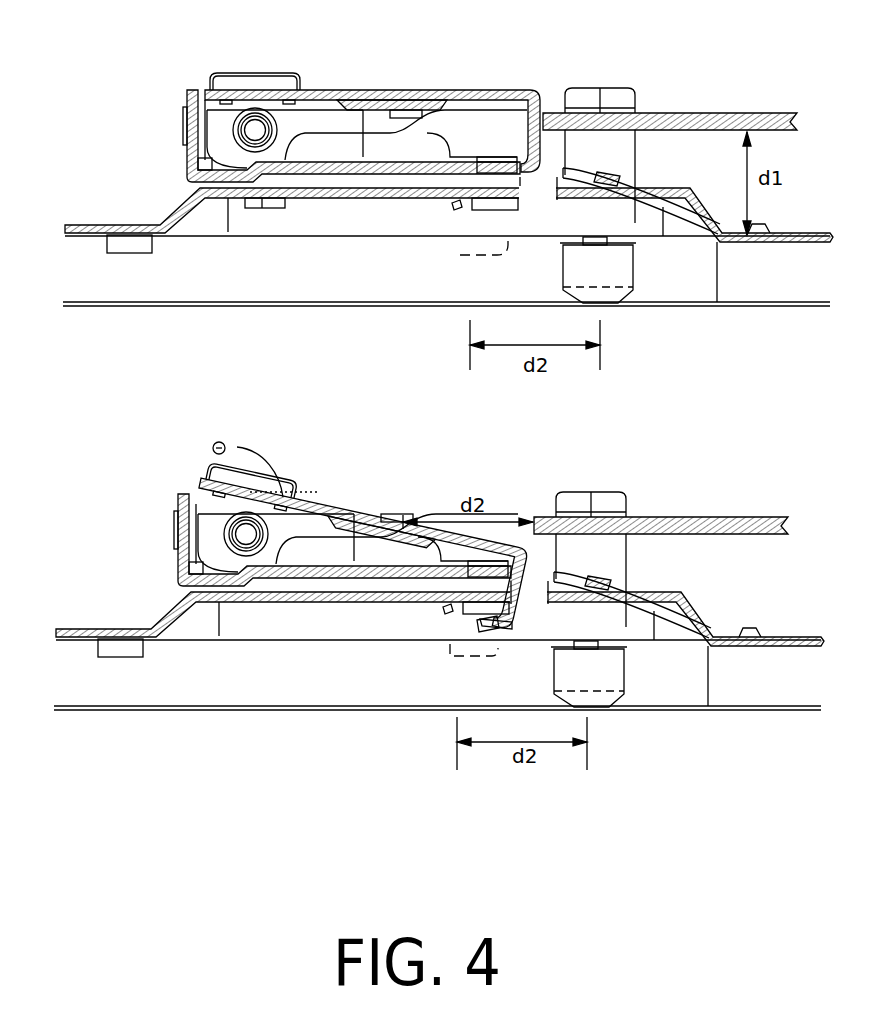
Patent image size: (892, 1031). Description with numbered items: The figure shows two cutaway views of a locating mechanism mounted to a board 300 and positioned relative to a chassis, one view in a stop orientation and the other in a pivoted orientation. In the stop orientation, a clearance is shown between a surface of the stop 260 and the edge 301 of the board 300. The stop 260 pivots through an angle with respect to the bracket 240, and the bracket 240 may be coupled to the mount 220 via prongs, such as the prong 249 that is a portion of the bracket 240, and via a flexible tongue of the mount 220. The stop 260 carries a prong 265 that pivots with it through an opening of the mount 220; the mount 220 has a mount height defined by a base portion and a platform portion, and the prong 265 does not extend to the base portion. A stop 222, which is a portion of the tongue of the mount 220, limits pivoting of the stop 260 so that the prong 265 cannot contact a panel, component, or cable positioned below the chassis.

The mount 220 is at (188, 204).
The stop 222 is at (542, 168).
The bracket 240 is at (188, 103).
The prong 249 is at (286, 206).
The stop 260 is at (490, 90).
The prong 265 is at (510, 633).
The board 300 is at (688, 118).
The edge 301 is at (547, 112).